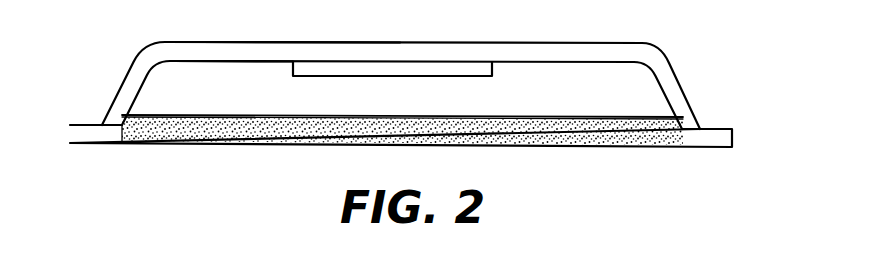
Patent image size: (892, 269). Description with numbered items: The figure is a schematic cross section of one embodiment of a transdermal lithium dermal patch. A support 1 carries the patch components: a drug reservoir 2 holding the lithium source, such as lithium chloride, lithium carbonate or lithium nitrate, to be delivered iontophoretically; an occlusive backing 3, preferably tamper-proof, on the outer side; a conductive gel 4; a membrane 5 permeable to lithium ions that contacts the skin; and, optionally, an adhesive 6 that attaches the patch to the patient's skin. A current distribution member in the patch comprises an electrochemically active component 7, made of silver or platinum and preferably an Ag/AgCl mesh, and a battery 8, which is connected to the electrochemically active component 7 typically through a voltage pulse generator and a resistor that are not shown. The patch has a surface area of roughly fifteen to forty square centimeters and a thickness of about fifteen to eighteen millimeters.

The support 1 is at (118, 86).
The drug reservoir 2 is at (200, 80).
The occlusive backing 3 is at (248, 47).
The conductive gel 4 is at (158, 135).
The membrane 5 is at (228, 145).
The adhesive 6 is at (713, 150).
The electrochemically active component 7 is at (547, 117).
The battery 8 is at (360, 70).